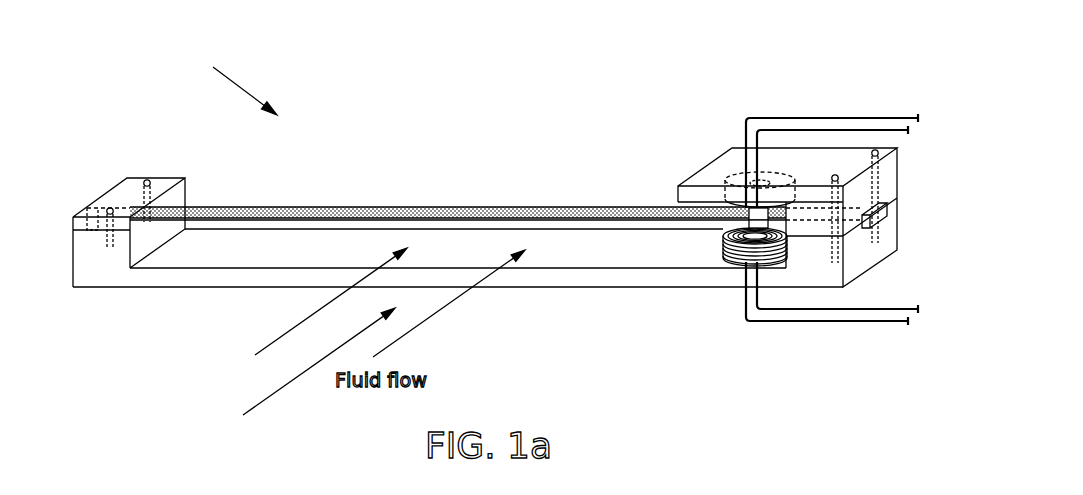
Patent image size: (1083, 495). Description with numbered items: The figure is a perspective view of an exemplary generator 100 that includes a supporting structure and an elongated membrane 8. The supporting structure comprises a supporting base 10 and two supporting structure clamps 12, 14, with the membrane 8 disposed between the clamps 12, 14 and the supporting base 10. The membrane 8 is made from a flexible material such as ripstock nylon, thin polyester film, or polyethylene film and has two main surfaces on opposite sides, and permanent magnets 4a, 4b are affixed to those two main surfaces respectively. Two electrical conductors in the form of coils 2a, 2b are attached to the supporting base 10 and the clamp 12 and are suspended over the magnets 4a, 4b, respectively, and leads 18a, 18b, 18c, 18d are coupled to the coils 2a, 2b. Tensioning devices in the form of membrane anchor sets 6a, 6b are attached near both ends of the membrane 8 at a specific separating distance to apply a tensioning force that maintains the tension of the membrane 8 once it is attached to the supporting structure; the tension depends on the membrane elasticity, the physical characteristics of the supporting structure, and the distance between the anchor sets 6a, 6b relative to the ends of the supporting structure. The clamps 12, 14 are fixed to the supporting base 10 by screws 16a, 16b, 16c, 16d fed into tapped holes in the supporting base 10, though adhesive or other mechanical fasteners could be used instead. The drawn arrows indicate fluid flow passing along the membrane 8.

The generator 100 is at (224, 83).
The elongated membrane 8 is at (272, 208).
The supporting base 10 is at (258, 278).
The supporting structure clamp 14 is at (83, 226).
The supporting structure clamp 12 is at (702, 178).
The membrane anchor set 6a is at (876, 228).
The membrane anchor set 6b is at (108, 207).
The screw 16a is at (110, 247).
The screw 16b is at (147, 223).
The screw 16c is at (833, 175).
The screw 16d is at (875, 150).
The coil 2a is at (725, 244).
The coil 2b is at (732, 170).
The permanent magnet 4a is at (752, 245).
The permanent magnet 4b is at (740, 240).
The lead 18a is at (750, 318).
The lead 18b is at (800, 322).
The lead 18c is at (742, 132).
The lead 18d is at (786, 130).